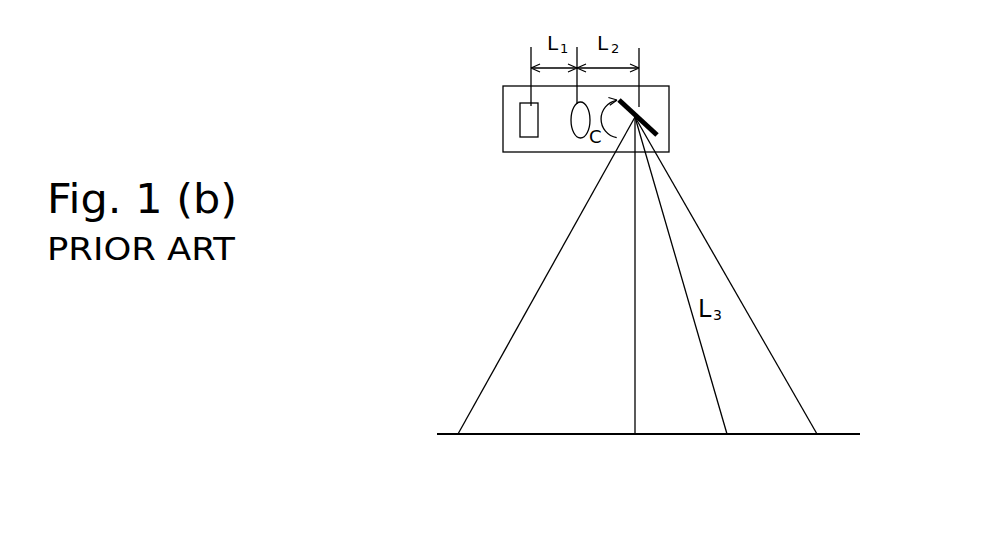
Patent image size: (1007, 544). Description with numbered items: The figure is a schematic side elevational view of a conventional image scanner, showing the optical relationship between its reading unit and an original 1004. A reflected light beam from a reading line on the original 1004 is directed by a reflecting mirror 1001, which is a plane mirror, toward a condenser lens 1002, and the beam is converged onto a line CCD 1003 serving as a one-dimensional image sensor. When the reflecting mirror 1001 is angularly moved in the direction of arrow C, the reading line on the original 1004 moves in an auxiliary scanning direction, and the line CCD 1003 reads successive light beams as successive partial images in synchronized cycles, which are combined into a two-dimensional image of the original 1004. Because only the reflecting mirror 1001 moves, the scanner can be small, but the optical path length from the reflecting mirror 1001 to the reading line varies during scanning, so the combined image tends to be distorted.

The reflecting mirror 1001 is at (655, 130).
The condenser lens 1002 is at (576, 140).
The line CCD 1003 is at (520, 122).
The original 1004 is at (840, 434).